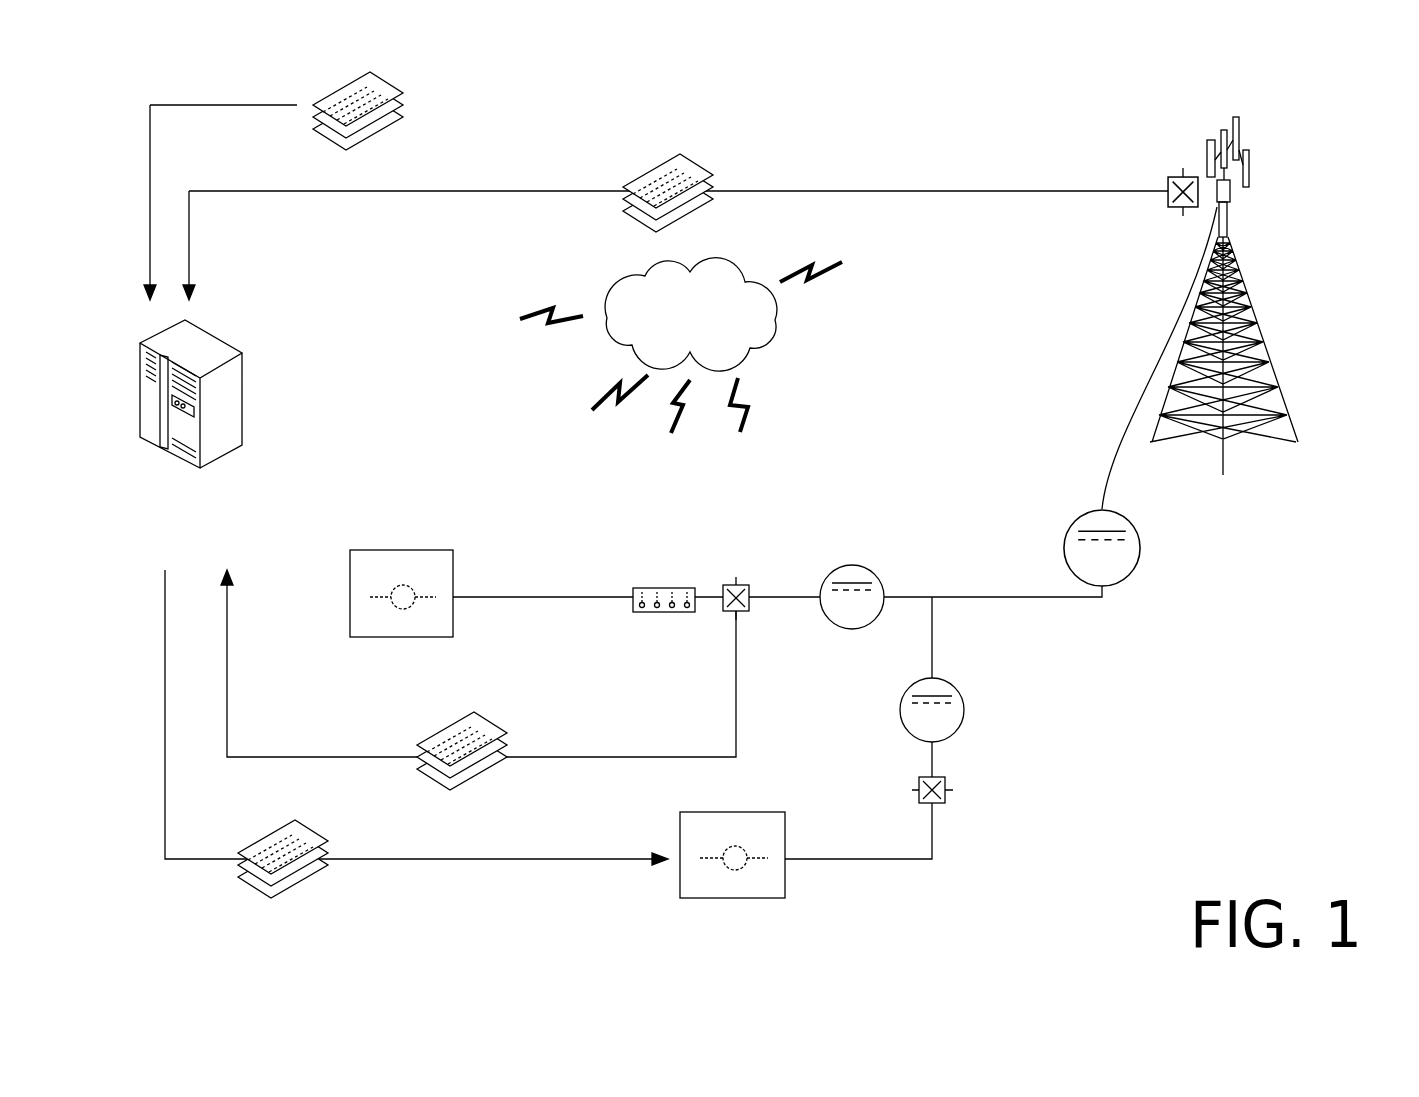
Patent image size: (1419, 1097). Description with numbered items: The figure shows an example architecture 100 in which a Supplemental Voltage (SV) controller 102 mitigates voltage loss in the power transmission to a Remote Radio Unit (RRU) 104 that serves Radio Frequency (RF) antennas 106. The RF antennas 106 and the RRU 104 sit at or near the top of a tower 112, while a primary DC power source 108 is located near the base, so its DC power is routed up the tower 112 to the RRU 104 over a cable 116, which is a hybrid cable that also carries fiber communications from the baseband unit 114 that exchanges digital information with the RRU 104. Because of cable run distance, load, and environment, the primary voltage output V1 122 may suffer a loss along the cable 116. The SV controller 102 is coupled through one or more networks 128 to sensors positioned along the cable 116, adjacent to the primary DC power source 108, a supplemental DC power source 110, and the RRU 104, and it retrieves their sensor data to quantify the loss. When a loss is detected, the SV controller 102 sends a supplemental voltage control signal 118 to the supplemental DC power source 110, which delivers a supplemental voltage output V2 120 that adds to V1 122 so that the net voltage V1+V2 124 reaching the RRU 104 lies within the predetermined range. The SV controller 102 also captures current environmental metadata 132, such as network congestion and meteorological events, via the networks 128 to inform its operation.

The architecture 100 is at (1323, 87).
The Supplemental Voltage (SV) controller 102 is at (213, 334).
The Remote Radio Unit (RRU) 104 is at (1230, 198).
The Radio Frequency (RF) antennas 106 is at (1213, 157).
The primary DC power source 108 is at (402, 550).
The supplemental DC power source 110 is at (733, 812).
The tower 112 is at (1250, 433).
The baseband unit 114 is at (648, 613).
The cable 116 is at (1163, 353).
The supplemental voltage control signal 118 is at (308, 832).
The supplemental voltage output V2 120 is at (962, 690).
The primary voltage output V1 122 is at (865, 563).
The net-voltage of the power transmission (V1+V2) 124 is at (1128, 575).
The network(s) 128 is at (681, 345).
The current environmental metadata 132 is at (391, 82).